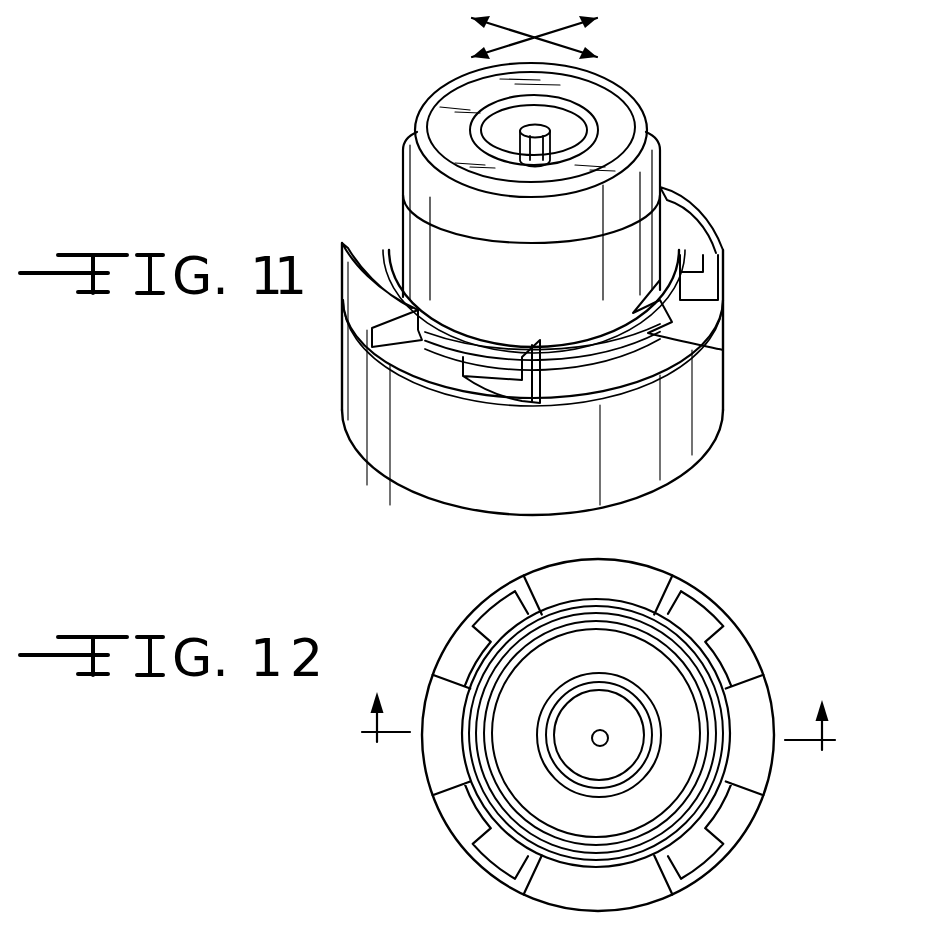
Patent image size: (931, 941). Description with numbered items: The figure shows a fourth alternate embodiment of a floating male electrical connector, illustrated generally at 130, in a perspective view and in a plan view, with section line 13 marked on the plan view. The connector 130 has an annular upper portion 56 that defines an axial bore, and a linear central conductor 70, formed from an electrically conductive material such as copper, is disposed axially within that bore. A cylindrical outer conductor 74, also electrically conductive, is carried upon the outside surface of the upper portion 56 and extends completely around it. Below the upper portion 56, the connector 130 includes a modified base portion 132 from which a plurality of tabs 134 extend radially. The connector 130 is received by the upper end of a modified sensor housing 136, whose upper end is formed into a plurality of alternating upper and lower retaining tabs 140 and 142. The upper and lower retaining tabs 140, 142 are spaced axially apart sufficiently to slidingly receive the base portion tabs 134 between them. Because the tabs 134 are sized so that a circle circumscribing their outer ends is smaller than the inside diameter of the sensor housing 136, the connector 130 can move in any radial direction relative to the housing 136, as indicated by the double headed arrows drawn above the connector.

In FIG. 11, the annular upper portion 56 is at (611, 121).
In FIG. 12, the annular upper portion 56 is at (675, 690).
In FIG. 11, the central conductor 70 is at (533, 153).
In FIG. 12, the central conductor 70 is at (610, 733).
In FIG. 11, the cylindrical outer conductor 74 is at (650, 172).
In FIG. 11, the male connector 130 is at (586, 265).
In FIG. 11, the base portion 132 is at (440, 338).
In FIG. 12, the base portion 132 is at (492, 645).
In FIG. 11, the tabs 134 is at (482, 373).
In FIG. 12, the tabs 134 is at (530, 599).
In FIG. 11, the sensor housing 136 is at (702, 394).
In FIG. 11, the upper retaining tabs 140 is at (683, 227).
In FIG. 11, the lower retaining tabs 142 is at (695, 303).
In FIG. 12, the section line 13- 13 is at (600, 735).